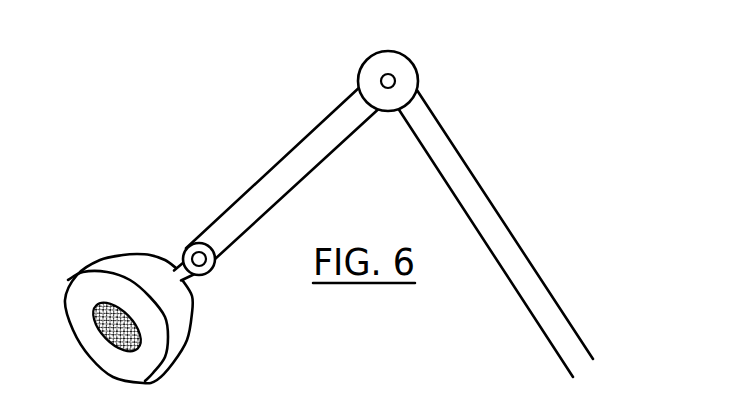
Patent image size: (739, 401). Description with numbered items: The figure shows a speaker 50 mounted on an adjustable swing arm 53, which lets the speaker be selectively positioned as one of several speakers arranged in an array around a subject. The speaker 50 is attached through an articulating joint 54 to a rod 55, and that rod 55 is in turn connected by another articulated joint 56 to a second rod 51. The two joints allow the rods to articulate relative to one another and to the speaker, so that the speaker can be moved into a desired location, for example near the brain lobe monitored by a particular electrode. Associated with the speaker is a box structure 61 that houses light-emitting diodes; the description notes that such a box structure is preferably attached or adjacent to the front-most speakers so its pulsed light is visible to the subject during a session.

The speaker 50 is at (102, 338).
The rod 51 is at (475, 177).
The swing arm 53 is at (252, 143).
The articulating joint 54 is at (218, 260).
The rod 55 is at (320, 123).
The articulated joint 56 is at (410, 57).
The box structure 61 is at (348, 390).